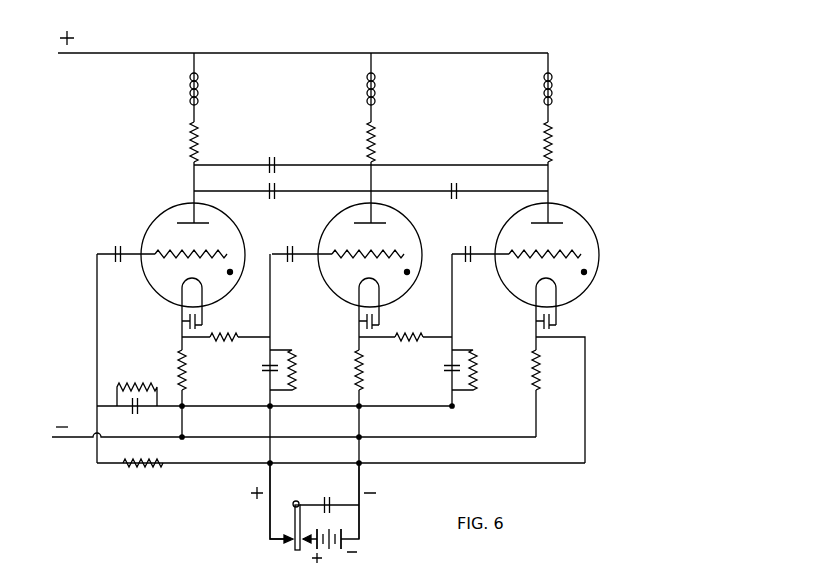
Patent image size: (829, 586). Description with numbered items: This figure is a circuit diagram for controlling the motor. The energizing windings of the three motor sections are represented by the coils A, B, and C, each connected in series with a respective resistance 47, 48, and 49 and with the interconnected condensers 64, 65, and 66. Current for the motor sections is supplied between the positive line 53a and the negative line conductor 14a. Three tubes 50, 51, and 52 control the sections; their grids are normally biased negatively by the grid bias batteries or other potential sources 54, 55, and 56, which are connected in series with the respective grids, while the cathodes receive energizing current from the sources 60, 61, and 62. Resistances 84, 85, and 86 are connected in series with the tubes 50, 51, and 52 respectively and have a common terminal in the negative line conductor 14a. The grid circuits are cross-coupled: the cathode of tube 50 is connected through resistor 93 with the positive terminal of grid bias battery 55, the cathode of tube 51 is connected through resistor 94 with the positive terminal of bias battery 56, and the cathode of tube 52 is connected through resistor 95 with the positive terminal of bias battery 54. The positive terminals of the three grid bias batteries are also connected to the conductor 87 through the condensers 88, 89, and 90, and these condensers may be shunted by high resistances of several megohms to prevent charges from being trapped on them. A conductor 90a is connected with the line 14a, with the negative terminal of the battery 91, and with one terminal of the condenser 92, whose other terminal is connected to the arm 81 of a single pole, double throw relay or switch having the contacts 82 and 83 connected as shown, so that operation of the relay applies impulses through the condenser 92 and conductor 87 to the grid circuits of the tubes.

The positive line 53a is at (130, 52).
The negative line conductor 14a is at (92, 439).
The coil A is at (203, 92).
The coil B is at (380, 92).
The coil C is at (557, 92).
The resistance 47 is at (189, 144).
The resistance 48 is at (366, 144).
The resistance 49 is at (542, 142).
The condenser 66 is at (270, 158).
The condenser 64 is at (272, 199).
The condenser 65 is at (454, 199).
The tube 50 is at (153, 220).
The tube 51 is at (325, 235).
The tube 52 is at (513, 227).
The grid bias battery 54 is at (118, 263).
The grid bias battery 55 is at (291, 263).
The grid bias battery 56 is at (470, 263).
The cathode source 60 is at (200, 329).
The cathode source 61 is at (377, 329).
The cathode source 62 is at (554, 331).
The resistor 93 is at (226, 342).
The resistor 94 is at (413, 342).
The resistance 84 is at (178, 362).
The resistance 85 is at (355, 366).
The resistance 86 is at (532, 376).
The condenser 89 is at (264, 369).
The condenser 90 is at (448, 370).
The condenser 88 is at (138, 412).
The resistor 95 is at (152, 468).
The conductor 87 is at (268, 519).
The arm 81 is at (296, 549).
The contact 83 is at (286, 542).
The contact 82 is at (314, 541).
The battery 91 is at (336, 546).
The condenser 92 is at (326, 497).
The conductor 90a is at (361, 477).